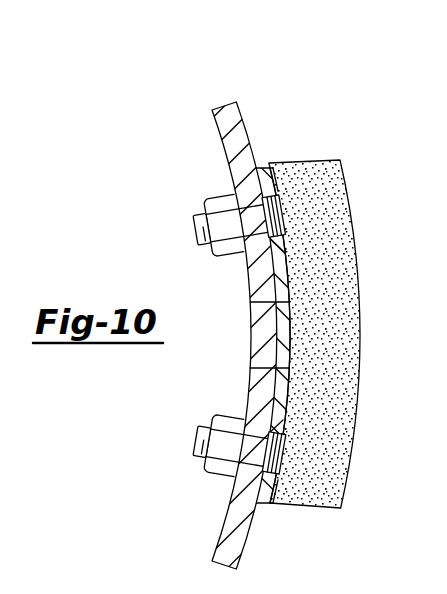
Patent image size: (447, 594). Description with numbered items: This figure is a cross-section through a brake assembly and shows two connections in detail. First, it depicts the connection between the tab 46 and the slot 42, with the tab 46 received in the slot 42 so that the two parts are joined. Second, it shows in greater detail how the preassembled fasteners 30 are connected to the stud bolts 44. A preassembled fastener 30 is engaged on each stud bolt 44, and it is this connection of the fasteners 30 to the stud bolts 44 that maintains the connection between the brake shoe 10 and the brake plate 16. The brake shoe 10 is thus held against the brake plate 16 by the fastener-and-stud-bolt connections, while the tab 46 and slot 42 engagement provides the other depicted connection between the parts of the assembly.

The brake shoe 10 is at (237, 90).
The brake plate 16 is at (300, 140).
The preassembled fastener 30 is at (236, 465).
The slot 42 is at (270, 330).
The stud bolt 44 is at (216, 196).
The tab 46 is at (251, 350).